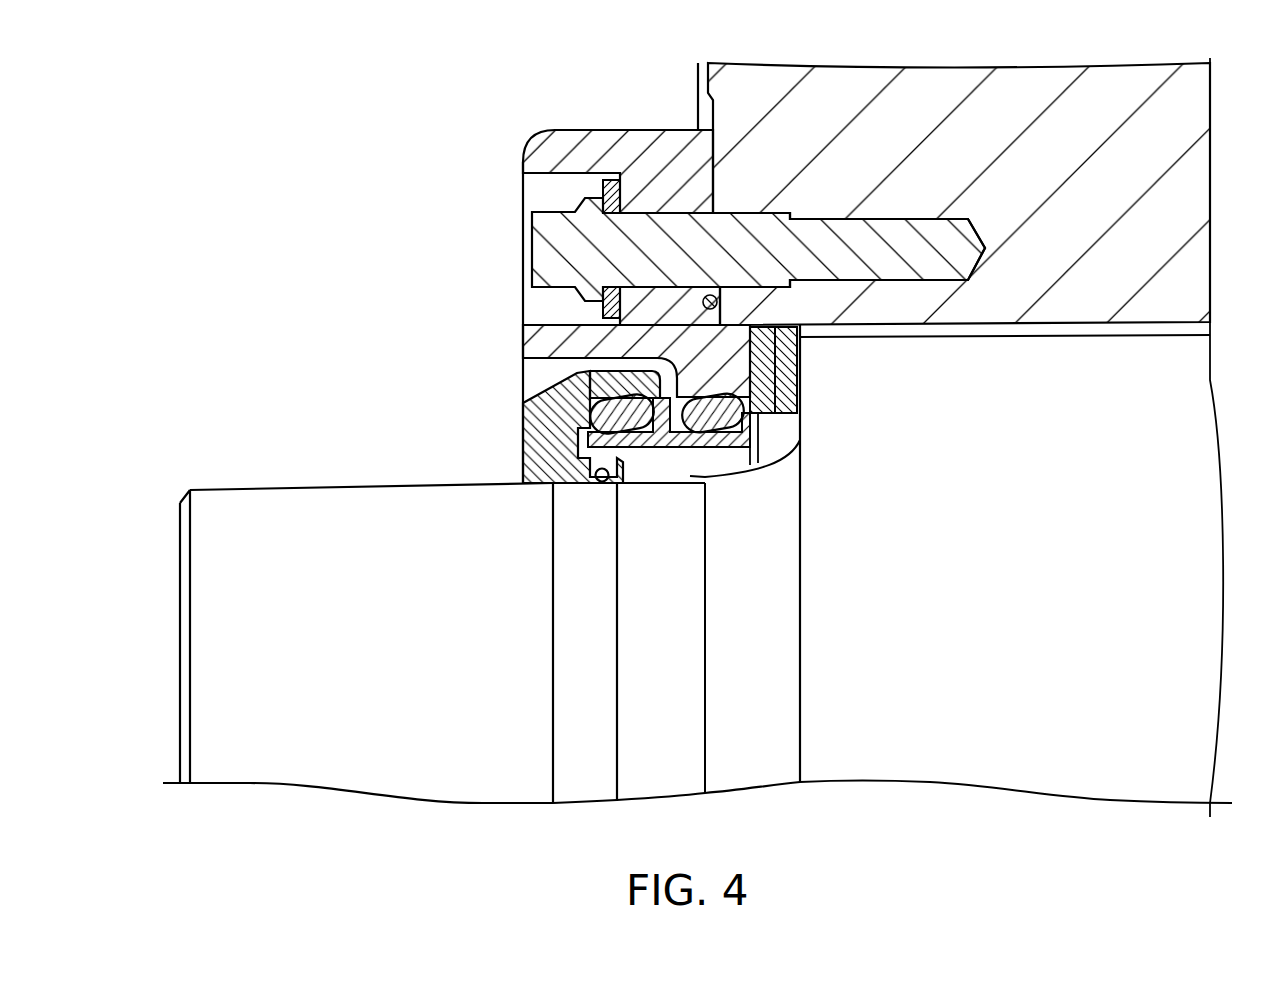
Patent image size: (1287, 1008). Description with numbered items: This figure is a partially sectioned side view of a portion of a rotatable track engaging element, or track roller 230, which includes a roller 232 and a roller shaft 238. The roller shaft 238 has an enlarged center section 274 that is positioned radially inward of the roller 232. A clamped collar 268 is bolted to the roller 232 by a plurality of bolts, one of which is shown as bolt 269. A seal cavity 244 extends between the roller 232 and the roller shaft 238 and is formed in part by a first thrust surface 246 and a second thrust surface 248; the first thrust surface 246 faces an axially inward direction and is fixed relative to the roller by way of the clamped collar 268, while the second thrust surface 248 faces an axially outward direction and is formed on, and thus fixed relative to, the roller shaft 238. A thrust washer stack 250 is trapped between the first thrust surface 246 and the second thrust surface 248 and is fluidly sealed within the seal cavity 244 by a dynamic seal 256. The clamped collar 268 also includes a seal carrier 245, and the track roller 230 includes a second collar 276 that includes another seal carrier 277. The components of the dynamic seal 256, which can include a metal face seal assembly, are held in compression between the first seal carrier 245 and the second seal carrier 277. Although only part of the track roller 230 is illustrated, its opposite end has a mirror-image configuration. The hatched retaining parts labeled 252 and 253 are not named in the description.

The track roller 230 is at (380, 132).
The roller 232 is at (833, 80).
The roller shaft 238 is at (243, 488).
The seal cavity 244 is at (787, 442).
The seal carrier 245 is at (715, 390).
The first thrust surface 246 is at (773, 415).
The second thrust surface 248 is at (797, 392).
The thrust washer stack 250 is at (769, 322).
The gap 252 is at (752, 358).
The support ring 253 is at (790, 362).
The dynamic seal 256 is at (637, 478).
The clamped collar 268 is at (607, 130).
The bolt 269 is at (545, 218).
The enlarged center section 274 is at (1190, 366).
The second collar 276 is at (527, 425).
The seal carrier 277 is at (625, 385).